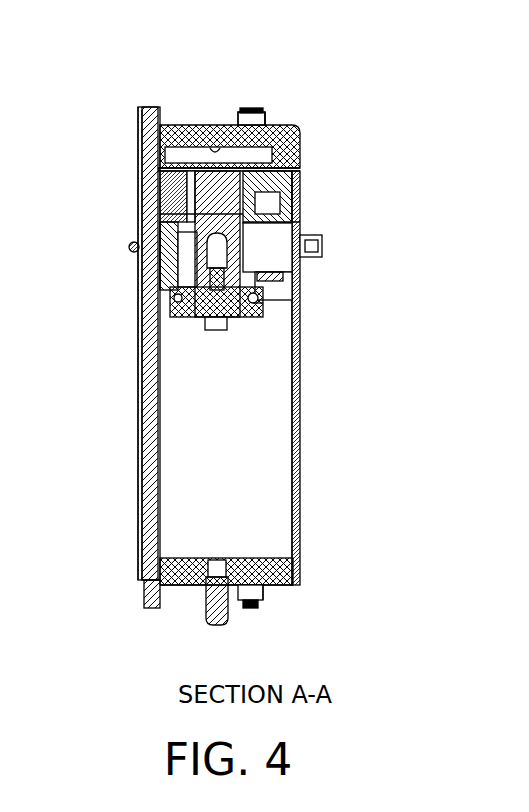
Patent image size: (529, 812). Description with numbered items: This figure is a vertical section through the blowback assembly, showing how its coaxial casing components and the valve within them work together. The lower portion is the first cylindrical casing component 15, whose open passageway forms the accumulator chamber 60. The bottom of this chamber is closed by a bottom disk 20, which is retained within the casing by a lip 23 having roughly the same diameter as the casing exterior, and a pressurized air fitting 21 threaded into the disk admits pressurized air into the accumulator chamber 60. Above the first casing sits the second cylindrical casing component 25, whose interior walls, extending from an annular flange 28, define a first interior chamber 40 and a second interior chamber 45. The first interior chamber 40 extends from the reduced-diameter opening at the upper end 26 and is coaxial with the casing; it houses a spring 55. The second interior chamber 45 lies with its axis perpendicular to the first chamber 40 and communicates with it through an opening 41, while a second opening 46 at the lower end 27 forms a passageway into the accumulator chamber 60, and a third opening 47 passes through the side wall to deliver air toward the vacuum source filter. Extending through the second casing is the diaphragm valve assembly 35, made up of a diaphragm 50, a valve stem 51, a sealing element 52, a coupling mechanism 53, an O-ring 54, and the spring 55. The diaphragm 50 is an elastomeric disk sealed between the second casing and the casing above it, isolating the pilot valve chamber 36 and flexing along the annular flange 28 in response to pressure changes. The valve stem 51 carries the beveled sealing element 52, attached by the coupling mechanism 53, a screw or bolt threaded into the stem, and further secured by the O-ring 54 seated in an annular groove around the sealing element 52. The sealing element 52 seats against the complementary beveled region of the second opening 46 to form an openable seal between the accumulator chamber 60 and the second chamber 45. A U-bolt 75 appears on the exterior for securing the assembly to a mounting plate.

The first cylindrical casing component 15 is at (300, 420).
The bottom disk 20 is at (285, 570).
The pressurized air fitting 21 is at (228, 615).
The lip 23 is at (293, 585).
The second cylindrical casing component 25 is at (143, 226).
The open upper end 26 is at (298, 152).
The lower end 27 is at (140, 287).
The annular flange 28 is at (300, 185).
The diaphragm valve assembly 35 is at (165, 193).
The pilot valve chamber 36 is at (272, 128).
The first interior chamber 40 is at (290, 207).
The opening 41 is at (322, 240).
The second interior chamber 45 is at (300, 226).
The second opening 46 is at (260, 300).
The third opening 47 is at (298, 262).
The diaphragm 50 is at (192, 170).
The valve stem 51 is at (270, 280).
The sealing element 52 is at (188, 320).
The coupling mechanism 53 is at (218, 328).
The O-ring 54 is at (175, 298).
The spring 55 is at (158, 170).
The accumulator chamber 60 is at (246, 412).
The U-bolt 75 is at (130, 247).